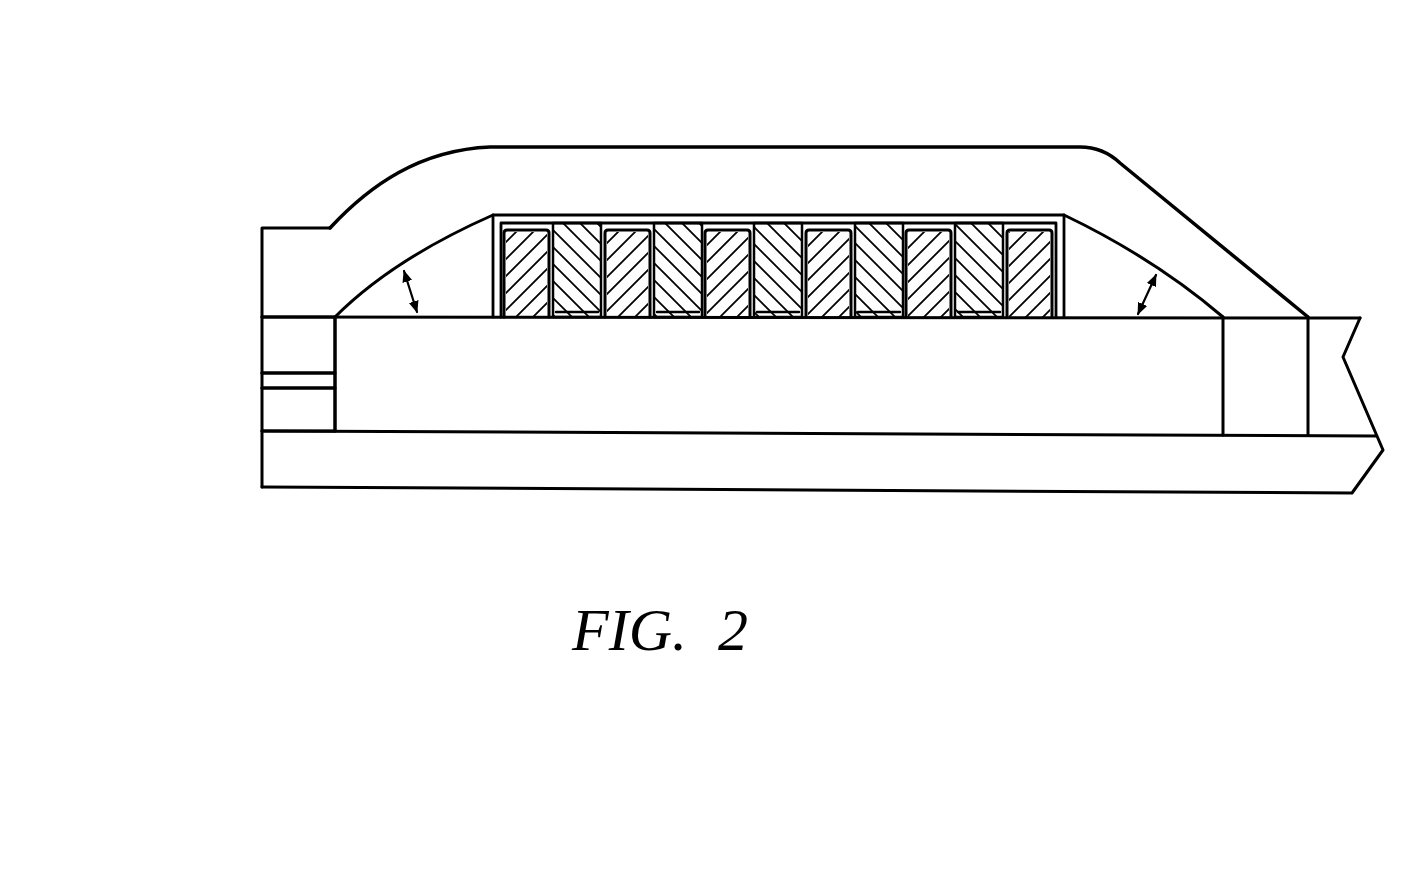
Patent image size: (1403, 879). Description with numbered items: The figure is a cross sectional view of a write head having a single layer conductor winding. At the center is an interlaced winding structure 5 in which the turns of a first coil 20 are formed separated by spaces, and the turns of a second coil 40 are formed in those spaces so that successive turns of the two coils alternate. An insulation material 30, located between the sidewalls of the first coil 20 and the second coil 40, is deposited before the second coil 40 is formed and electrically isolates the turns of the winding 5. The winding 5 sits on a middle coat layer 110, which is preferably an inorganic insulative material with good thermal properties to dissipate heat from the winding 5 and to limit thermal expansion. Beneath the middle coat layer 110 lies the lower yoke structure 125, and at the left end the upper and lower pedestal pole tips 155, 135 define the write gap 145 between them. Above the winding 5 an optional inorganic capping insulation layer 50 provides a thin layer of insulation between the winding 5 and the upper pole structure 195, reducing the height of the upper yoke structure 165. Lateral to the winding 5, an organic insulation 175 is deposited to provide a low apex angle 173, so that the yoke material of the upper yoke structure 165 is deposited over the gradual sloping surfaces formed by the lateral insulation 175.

The interlaced winding structure 5 is at (868, 340).
The first coil 20 is at (927, 233).
The insulation material 30 is at (873, 243).
The second coil 40 is at (775, 228).
The capping insulation layer 50 is at (720, 216).
The middle coat layer 110 is at (451, 393).
The lower yoke structure 125 is at (368, 460).
The lower pedestal pole tip 135 is at (281, 402).
The write gap 145 is at (278, 378).
The upper pedestal pole tip 155 is at (280, 333).
The upper yoke structure 165 is at (512, 142).
The apex angle 173 is at (397, 293).
The organic insulation 175 is at (447, 237).
The upper pole structure 195 is at (310, 189).